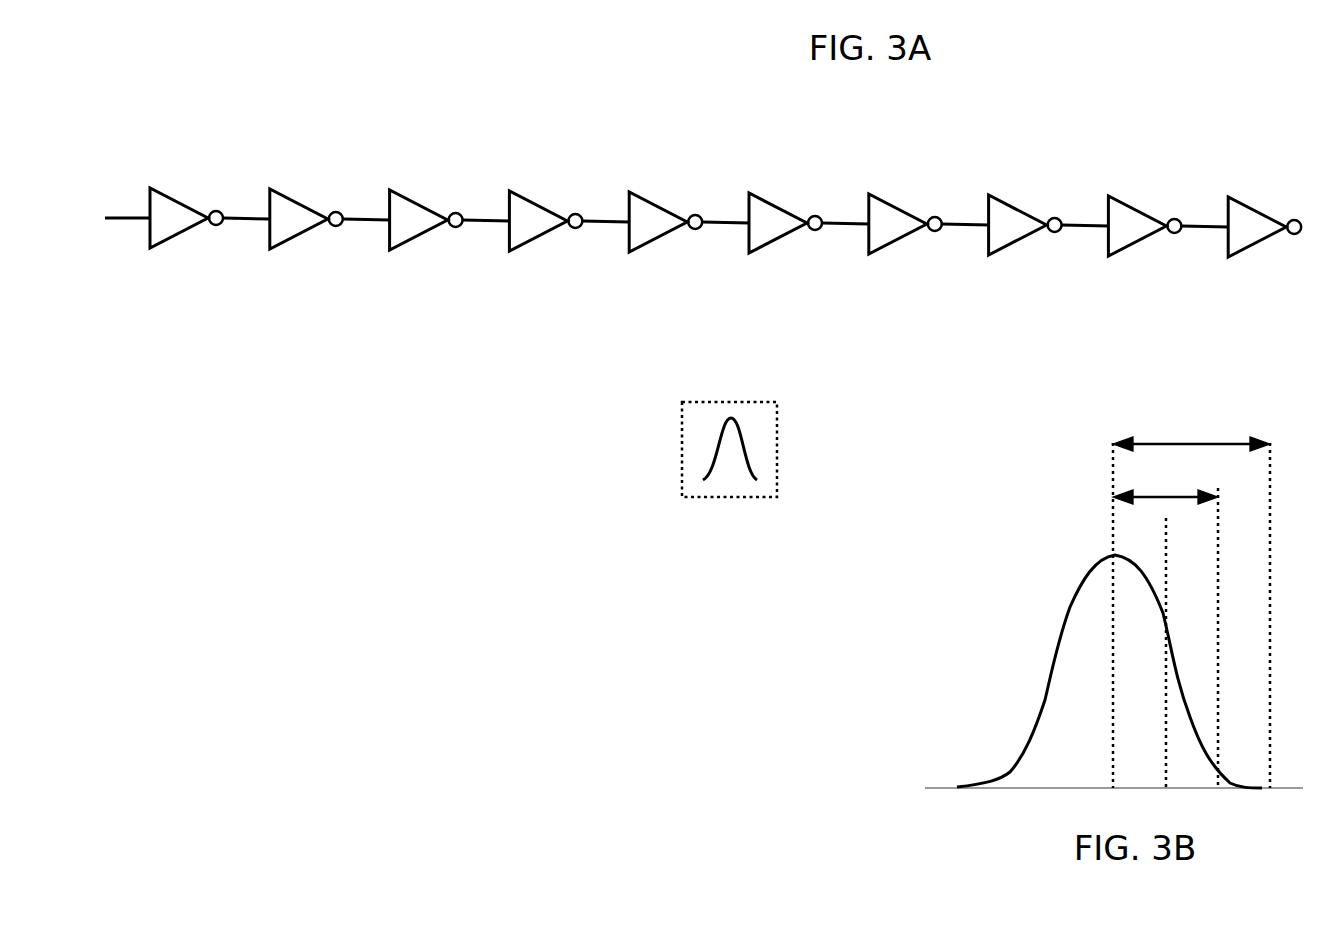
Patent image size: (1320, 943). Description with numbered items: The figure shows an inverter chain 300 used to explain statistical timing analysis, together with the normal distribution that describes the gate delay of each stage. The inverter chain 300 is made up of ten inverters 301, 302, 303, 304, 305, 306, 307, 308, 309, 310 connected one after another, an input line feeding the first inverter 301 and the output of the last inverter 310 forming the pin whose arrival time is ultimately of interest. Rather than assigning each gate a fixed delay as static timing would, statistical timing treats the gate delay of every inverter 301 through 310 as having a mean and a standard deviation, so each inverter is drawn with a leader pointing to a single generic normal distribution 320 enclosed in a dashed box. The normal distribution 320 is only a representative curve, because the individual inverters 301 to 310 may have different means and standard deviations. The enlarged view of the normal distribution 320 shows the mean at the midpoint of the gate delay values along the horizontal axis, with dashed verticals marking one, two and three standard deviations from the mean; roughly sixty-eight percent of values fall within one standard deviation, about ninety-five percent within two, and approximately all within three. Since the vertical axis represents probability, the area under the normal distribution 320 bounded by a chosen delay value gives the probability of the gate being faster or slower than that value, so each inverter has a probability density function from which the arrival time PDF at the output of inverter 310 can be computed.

In FIG. 3A, the inverter chain 300 is at (471, 50).
In FIG. 3A, the inverter 301 is at (682, 445).
In FIG. 3A, the inverter 302 is at (682, 421).
In FIG. 3A, the inverter 303 is at (682, 402).
In FIG. 3A, the inverter 304 is at (716, 402).
In FIG. 3A, the inverter 305 is at (727, 402).
In FIG. 3A, the inverter 306 is at (737, 402).
In FIG. 3A, the inverter 307 is at (750, 402).
In FIG. 3A, the inverter 308 is at (777, 402).
In FIG. 3A, the inverter 309 is at (777, 430).
In FIG. 3A, the inverter 310 is at (777, 452).
In FIG. 3A, the normal distribution 320 is at (729, 474).
In FIG. 3B, the normal distribution 320 is at (984, 634).